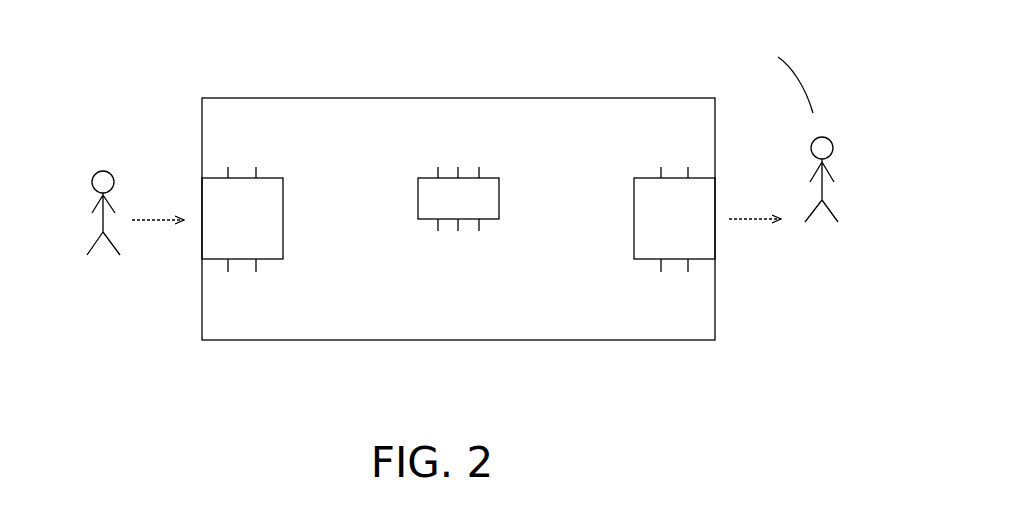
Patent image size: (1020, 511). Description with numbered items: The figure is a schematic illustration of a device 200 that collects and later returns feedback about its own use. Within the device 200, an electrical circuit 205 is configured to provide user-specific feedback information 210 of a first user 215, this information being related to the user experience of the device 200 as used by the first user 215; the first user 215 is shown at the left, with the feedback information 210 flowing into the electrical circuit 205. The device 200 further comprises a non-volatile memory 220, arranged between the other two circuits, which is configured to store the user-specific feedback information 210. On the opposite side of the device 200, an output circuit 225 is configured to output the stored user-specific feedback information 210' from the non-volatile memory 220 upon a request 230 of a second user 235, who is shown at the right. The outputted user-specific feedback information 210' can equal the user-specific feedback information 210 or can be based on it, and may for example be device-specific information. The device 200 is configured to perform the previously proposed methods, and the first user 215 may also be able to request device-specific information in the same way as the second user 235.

The device 200 is at (472, 98).
The electrical circuit 205 is at (283, 207).
The user-specific feedback information 210 is at (138, 155).
The stored user-specific feedback information 210' is at (772, 257).
The first user 215 is at (100, 220).
The non-volatile memory 220 is at (499, 185).
The output circuit 225 is at (634, 222).
The request 230 is at (730, 80).
The second user 235 is at (827, 193).